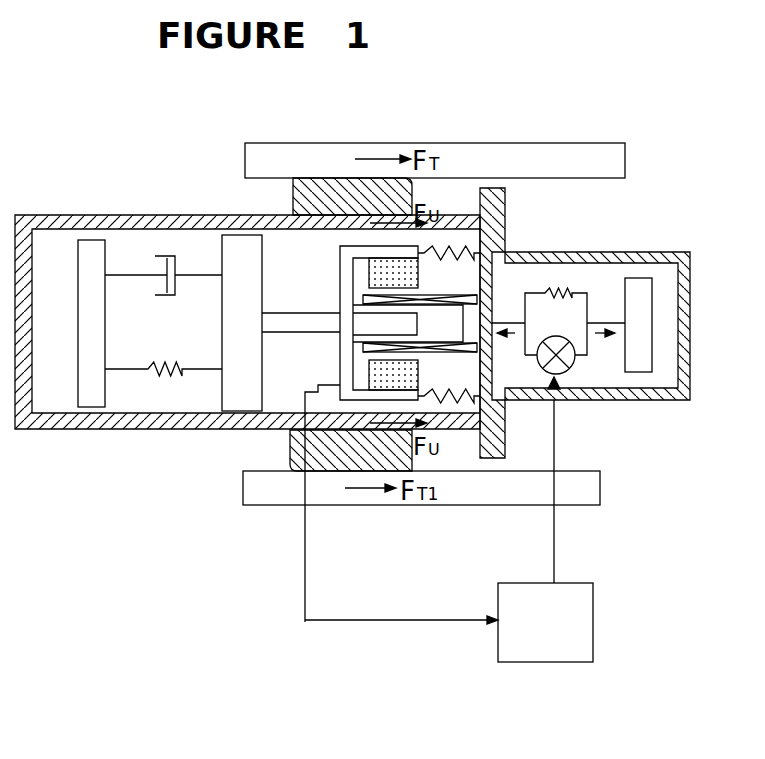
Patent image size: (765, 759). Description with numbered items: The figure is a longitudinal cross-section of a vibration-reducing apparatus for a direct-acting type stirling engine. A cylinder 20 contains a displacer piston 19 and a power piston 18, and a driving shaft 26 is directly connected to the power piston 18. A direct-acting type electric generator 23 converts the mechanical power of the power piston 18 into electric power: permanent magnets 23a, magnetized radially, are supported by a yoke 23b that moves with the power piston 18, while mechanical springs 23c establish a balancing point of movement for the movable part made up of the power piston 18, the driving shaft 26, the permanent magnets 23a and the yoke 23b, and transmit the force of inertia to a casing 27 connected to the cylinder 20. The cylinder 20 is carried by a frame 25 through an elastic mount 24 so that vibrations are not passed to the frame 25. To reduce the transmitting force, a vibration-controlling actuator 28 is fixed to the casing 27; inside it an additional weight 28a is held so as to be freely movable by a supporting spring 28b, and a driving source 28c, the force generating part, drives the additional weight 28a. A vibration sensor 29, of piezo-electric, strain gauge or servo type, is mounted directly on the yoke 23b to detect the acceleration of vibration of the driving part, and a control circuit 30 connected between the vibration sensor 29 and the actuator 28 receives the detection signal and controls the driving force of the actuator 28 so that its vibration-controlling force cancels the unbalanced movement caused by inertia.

The power piston 18 is at (233, 392).
The displacer piston 19 is at (92, 388).
The cylinder 20 is at (107, 215).
The direct-acting type electric generator 23 is at (349, 248).
The permanent magnets 23a is at (372, 272).
The yoke 23b is at (345, 165).
The springs 23c is at (457, 248).
The elastic mount 24 is at (328, 178).
The frame 25 is at (495, 505).
The driving shaft 26 is at (285, 323).
The casing 27 is at (495, 247).
The vibration-controlling actuator 28 is at (620, 314).
The additional weight 28a is at (638, 305).
The supporting spring 28b is at (553, 292).
The driving source 28c is at (567, 372).
The vibration sensor 29 is at (303, 386).
The control circuit 30 is at (594, 620).